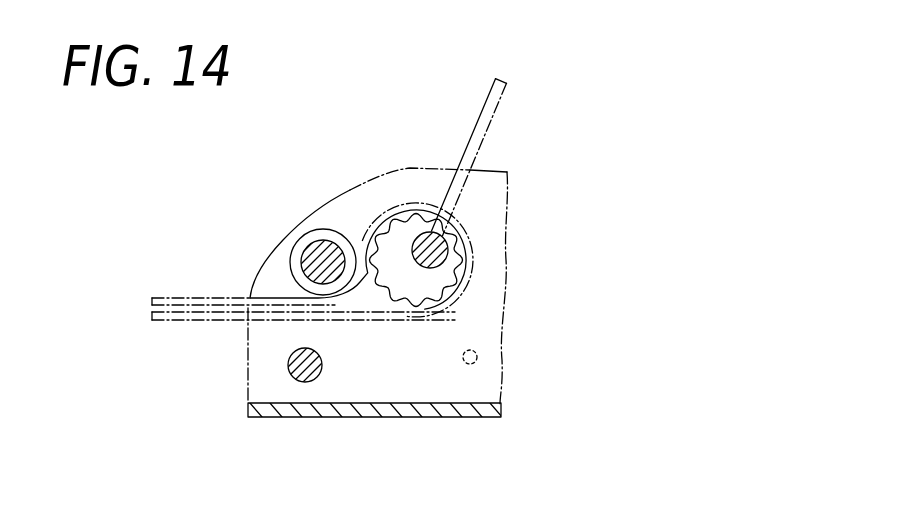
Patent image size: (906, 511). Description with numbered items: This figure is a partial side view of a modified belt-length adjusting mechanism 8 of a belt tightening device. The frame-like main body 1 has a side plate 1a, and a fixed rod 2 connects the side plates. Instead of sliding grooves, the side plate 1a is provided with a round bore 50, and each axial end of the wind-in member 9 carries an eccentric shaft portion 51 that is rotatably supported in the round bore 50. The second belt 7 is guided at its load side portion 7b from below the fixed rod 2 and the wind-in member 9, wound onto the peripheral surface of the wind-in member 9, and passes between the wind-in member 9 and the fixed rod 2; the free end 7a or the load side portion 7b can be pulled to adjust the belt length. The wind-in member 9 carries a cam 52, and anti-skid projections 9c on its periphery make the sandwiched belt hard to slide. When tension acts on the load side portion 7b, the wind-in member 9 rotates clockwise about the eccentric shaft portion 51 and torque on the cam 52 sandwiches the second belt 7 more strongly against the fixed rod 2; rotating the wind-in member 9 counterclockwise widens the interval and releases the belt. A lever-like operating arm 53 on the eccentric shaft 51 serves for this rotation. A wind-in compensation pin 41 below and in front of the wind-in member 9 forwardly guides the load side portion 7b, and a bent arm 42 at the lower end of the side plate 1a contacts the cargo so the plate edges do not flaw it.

The main body 1 is at (258, 260).
The side plate 1a is at (309, 203).
The fixed rod 2 is at (297, 237).
The second belt 7 is at (212, 323).
The free end 7a is at (181, 297).
The load side portion 7b is at (167, 323).
The belt-length adjusting mechanism 8 is at (352, 230).
The wind-in member 9 is at (404, 210).
The anti-skid projections 9c is at (420, 320).
The wind-in compensation pin 41 is at (300, 383).
The bent arm 42 is at (485, 414).
The round bore 50 is at (435, 248).
The eccentric shaft portion 51 is at (437, 240).
The cam 52 is at (377, 290).
The lever-like operating arm 53 is at (497, 105).